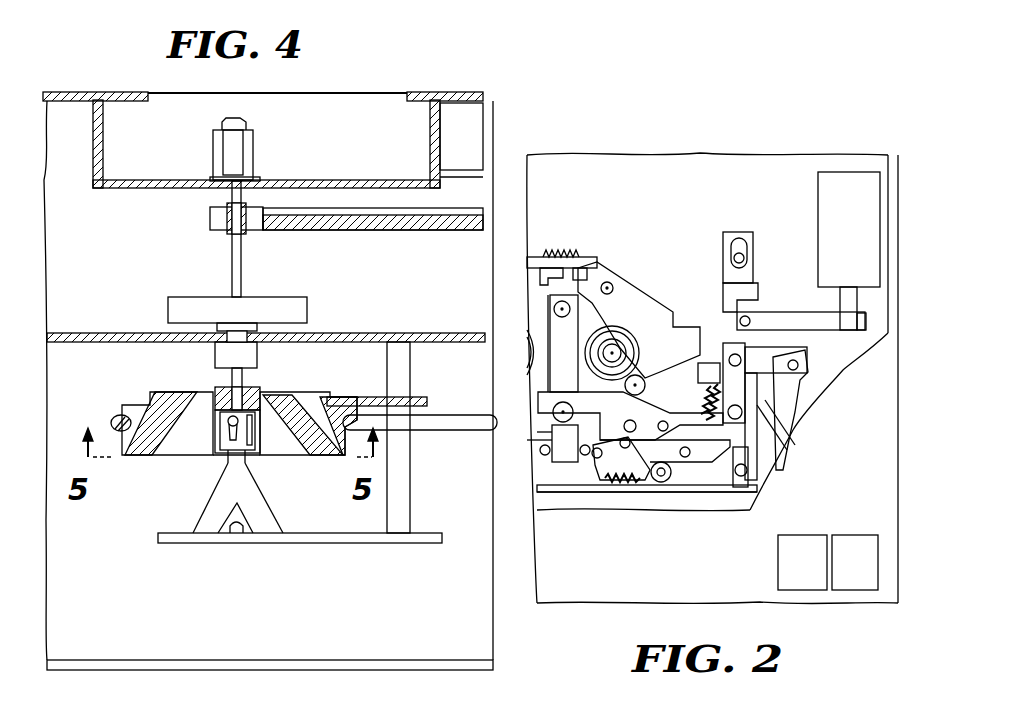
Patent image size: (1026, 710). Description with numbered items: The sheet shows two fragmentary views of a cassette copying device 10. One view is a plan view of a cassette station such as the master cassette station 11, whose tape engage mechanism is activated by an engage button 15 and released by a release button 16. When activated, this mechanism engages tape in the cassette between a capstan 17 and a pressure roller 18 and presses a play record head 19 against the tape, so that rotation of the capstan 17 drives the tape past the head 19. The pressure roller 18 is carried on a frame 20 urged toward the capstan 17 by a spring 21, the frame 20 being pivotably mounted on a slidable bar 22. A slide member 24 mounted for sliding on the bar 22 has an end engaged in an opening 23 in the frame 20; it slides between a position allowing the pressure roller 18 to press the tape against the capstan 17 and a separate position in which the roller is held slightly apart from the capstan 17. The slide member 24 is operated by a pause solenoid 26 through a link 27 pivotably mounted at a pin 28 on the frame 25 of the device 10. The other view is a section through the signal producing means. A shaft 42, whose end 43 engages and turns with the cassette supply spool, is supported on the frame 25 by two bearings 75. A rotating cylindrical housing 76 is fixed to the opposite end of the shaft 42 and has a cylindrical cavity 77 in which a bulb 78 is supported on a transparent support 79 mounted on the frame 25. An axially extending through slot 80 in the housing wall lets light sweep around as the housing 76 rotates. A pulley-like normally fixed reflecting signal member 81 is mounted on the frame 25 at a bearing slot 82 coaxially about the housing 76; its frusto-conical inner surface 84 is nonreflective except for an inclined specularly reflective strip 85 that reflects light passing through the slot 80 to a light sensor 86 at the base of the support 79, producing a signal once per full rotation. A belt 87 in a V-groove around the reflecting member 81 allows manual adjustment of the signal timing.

In FIG. 4, the device 10 is at (500, 661).
In FIG. 2, the device 10 is at (854, 148).
In FIG. 4, the master cassette station 11 is at (410, 90).
In FIG. 2, the engage button 15 is at (800, 545).
In FIG. 2, the release button 16 is at (852, 545).
In FIG. 2, the capstan 17 is at (614, 423).
In FIG. 2, the pressure roller 18 is at (644, 392).
In FIG. 2, the play record head 19 is at (548, 438).
In FIG. 2, the frame 20 is at (605, 475).
In FIG. 2, the spring 21 is at (630, 484).
In FIG. 2, the slidable bar 22 is at (716, 494).
In FIG. 2, the opening 23 is at (672, 484).
In FIG. 2, the slide member 24 is at (786, 434).
In FIG. 4, the frame 25 is at (410, 226).
In FIG. 2, the frame 25 is at (792, 168).
In FIG. 2, the pause solenoid 26 is at (860, 233).
In FIG. 2, the link 27 is at (805, 320).
In FIG. 2, the pin 28 is at (785, 318).
In FIG. 4, the shaft 42 is at (242, 259).
In FIG. 4, the end of shaft 43 is at (255, 133).
In FIG. 4, the bearings 75 is at (222, 237).
In FIG. 4, the cylindrical housing 76 is at (219, 391).
In FIG. 4, the cylindrical cavity 77 is at (225, 456).
In FIG. 4, the bulb 78 is at (238, 463).
In FIG. 4, the transparent support 79 is at (268, 507).
In FIG. 4, the slot 80 is at (250, 432).
In FIG. 4, the reflecting signal member 81 is at (143, 452).
In FIG. 4, the bearing slot 82 is at (162, 436).
In FIG. 4, the frusto-conical inner surface 84 is at (167, 445).
In FIG. 4, the reflective strip 85 is at (292, 442).
In FIG. 4, the light sensor 86 is at (237, 543).
In FIG. 4, the belt 87 is at (465, 432).